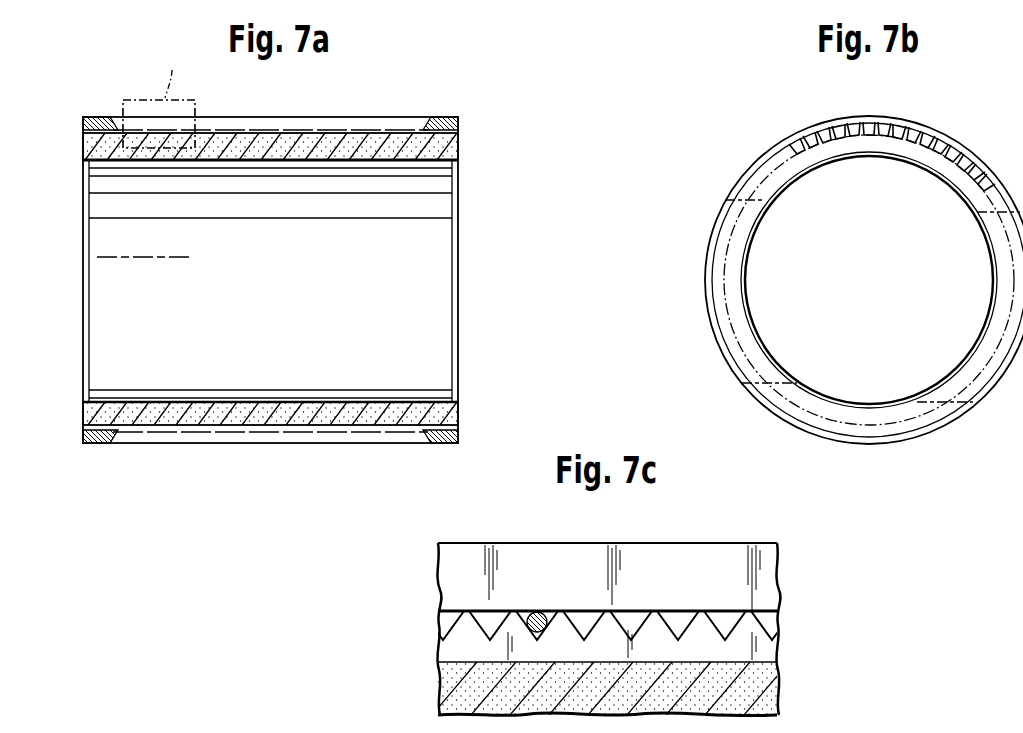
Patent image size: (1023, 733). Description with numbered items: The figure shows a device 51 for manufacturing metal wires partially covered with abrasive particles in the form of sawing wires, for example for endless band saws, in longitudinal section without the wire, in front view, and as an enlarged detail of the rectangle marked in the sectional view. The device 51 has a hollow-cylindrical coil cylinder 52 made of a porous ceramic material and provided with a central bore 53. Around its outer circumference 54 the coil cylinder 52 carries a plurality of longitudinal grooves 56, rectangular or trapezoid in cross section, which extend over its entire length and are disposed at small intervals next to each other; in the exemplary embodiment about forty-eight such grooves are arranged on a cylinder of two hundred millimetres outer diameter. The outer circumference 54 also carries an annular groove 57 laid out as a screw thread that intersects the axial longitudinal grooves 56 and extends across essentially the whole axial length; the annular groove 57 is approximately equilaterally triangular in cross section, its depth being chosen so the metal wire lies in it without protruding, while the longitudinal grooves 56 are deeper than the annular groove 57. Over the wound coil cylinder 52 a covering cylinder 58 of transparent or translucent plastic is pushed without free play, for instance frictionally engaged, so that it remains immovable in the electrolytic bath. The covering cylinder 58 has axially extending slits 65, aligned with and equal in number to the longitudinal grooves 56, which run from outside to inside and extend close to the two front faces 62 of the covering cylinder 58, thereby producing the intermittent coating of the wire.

In FIG. 7A, the device 51 is at (432, 98).
In FIG. 7B, the device 51 is at (958, 108).
In FIG. 7A, the coil cylinder 52 is at (466, 164).
In FIG. 7B, the coil cylinder 52 is at (708, 212).
In FIG. 7C, the coil cylinder 52 is at (760, 686).
In FIG. 7A, the central bore 53 is at (435, 392).
In FIG. 7B, the central bore 53 is at (745, 287).
In FIG. 7B, the outer circumference 54 is at (728, 340).
In FIG. 7C, the outer circumference 54 is at (465, 609).
In FIG. 7B, the longitudinal grooves 56 is at (850, 155).
In FIG. 7C, the annular groove 57 is at (730, 625).
In FIG. 7A, the covering cylinder 58 is at (100, 447).
In FIG. 7B, the covering cylinder 58 is at (755, 392).
In FIG. 7A, the front faces 62 is at (83, 133).
In FIG. 7A, the slits 65 is at (375, 126).
In FIG. 7B, the slits 65 is at (853, 128).
In FIG. 7C, the slits 65 is at (740, 583).